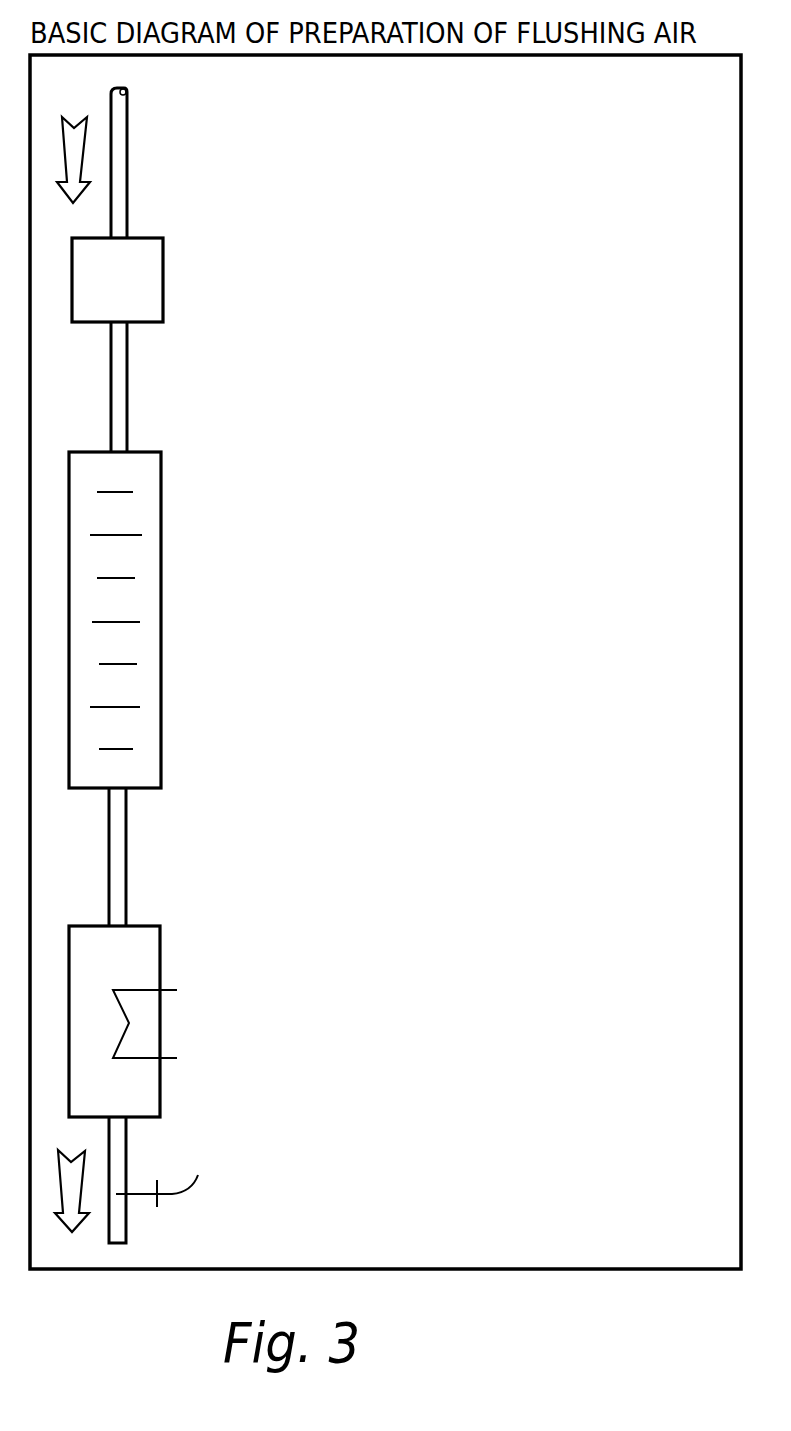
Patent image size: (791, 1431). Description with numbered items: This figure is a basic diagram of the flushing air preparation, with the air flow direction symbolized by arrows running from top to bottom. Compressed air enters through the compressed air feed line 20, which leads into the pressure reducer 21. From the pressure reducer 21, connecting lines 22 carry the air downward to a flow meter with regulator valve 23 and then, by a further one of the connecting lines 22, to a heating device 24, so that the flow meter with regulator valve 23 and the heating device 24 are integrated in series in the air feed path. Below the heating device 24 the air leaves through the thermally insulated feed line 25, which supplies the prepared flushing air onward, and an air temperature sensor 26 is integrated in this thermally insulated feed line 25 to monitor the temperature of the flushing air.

The compressed air feed line 20 is at (145, 170).
The pressure reducer 21 is at (168, 292).
The connecting lines 22 is at (135, 393).
The flow meter with regulator valve 23 is at (168, 633).
The heating device 24 is at (177, 1038).
The thermally insulated feed line 25 is at (148, 1155).
The air temperature sensor 26 is at (163, 1200).